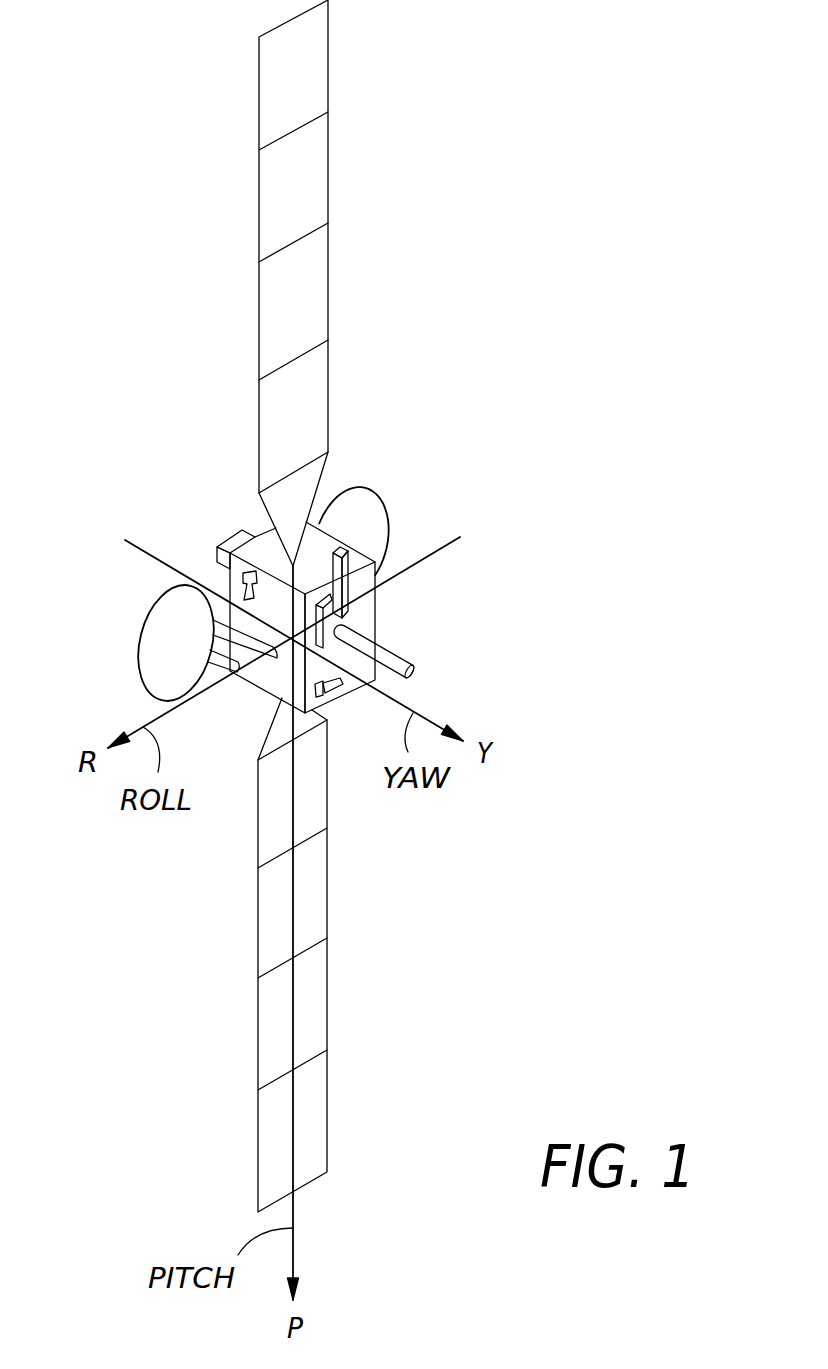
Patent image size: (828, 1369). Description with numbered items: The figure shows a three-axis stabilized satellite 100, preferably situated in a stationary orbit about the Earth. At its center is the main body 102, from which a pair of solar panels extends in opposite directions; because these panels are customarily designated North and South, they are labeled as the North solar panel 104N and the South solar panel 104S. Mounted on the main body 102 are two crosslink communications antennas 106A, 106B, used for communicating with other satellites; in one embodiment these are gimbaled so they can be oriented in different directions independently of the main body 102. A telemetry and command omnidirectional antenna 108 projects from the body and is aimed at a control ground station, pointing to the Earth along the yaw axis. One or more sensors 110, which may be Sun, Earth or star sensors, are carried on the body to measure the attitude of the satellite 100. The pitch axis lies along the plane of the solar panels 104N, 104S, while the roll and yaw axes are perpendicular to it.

The three-axis stabilized satellite 100 is at (408, 232).
The main body 102 is at (365, 615).
The North solar panel 104N is at (308, 180).
The South solar panel 104S is at (317, 1000).
The crosslink communications antenna 106A is at (167, 625).
The crosslink communications antenna 106B is at (372, 498).
The telemetry and command omnidirectional antenna 108 is at (400, 660).
The sensors 110 is at (243, 553).